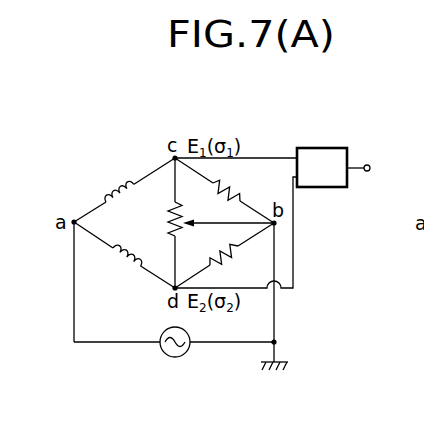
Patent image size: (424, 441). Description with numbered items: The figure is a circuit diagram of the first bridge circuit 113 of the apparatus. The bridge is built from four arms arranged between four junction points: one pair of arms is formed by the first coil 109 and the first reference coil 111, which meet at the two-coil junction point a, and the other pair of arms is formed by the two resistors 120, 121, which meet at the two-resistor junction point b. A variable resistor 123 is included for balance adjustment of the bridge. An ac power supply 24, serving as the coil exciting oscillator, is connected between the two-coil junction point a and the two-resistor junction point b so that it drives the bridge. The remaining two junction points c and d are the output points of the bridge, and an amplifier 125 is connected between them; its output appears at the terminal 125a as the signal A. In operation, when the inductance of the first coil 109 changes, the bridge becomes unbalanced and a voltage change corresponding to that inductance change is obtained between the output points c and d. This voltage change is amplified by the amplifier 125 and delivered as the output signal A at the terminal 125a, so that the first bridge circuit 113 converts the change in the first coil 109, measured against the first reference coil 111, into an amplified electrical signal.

The first bridge circuit 113 is at (132, 155).
The first coil 109 is at (116, 186).
The first reference coil 111 is at (123, 261).
The resistor 120 is at (255, 186).
The resistor 121 is at (229, 256).
The variable resistor 123 is at (180, 212).
The amplifier 125 is at (337, 147).
The output terminal A 125a is at (369, 163).
The ac power supply 24 is at (175, 357).